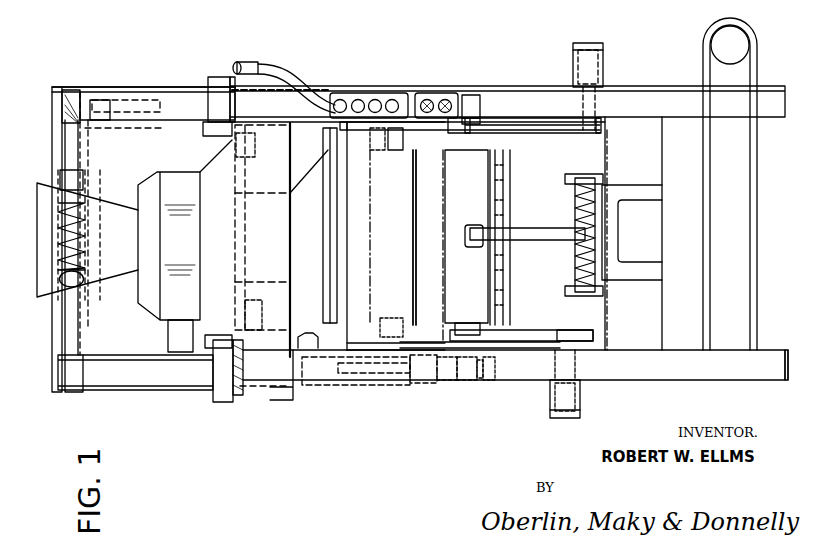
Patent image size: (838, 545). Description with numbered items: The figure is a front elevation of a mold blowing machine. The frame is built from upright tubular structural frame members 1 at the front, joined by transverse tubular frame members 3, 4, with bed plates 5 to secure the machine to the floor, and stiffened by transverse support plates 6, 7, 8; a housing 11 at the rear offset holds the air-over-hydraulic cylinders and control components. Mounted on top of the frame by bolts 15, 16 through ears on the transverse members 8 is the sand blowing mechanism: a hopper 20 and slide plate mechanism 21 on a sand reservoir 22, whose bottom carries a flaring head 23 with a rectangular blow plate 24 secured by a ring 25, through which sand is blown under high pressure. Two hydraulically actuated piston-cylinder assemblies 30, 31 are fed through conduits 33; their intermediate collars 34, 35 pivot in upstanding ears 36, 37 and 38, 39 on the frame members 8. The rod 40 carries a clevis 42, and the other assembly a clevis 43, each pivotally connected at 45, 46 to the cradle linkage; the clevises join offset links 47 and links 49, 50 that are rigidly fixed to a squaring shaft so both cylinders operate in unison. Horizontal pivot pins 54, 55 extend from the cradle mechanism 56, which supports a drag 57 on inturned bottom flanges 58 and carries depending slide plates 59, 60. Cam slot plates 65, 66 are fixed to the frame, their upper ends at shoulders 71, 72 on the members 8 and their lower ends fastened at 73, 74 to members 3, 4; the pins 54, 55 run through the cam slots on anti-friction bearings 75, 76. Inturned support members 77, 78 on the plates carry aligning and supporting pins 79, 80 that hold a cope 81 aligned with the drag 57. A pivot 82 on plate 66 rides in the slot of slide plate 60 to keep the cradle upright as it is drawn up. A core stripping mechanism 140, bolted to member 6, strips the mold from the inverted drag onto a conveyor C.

The upright tubular structural frame member 1 is at (537, 97).
The transverse tubular frame member 3 is at (550, 400).
The transverse tubular frame member 4 is at (573, 70).
The bed plate 5 is at (785, 360).
The transverse support plate 6 is at (643, 133).
The transverse support plate 7 is at (280, 328).
The transverse support plate 8 is at (266, 80).
The housing 11 is at (117, 342).
The bolt 15 is at (260, 328).
The bolt 16 is at (255, 147).
The hopper 20 is at (103, 267).
The slide plate mechanism 21 is at (168, 175).
The sand reservoir 22 is at (285, 220).
The flaring head 23 is at (312, 187).
The blow plate 24 is at (340, 223).
The ring 25 is at (330, 128).
The piston-cylinder assembly 30 is at (143, 378).
The piston-cylinder assembly 31 is at (165, 100).
The conduit 33 is at (68, 143).
The collar 34 is at (220, 360).
The collar 35 is at (215, 100).
The upstanding ear 36 is at (234, 385).
The upstanding ear 37 is at (205, 333).
The upstanding ear 38 is at (203, 130).
The upstanding ear 39 is at (229, 100).
The rod 40 is at (388, 372).
The clevis 42 is at (420, 375).
The clevis 43 is at (406, 95).
The pivotal connection 45 is at (447, 375).
The pivotal connection 46 is at (440, 93).
The link 47 is at (463, 372).
The link 49 is at (483, 367).
The link 50 is at (472, 120).
The horizontal pivot pin 54 is at (474, 372).
The horizontal pivot pin 55 is at (470, 95).
The cradle mechanism 56 is at (503, 143).
The drag 57 is at (457, 190).
The inturned bottom flange 58 is at (497, 312).
The depending slide plate 59 is at (558, 330).
The depending slide plate 60 is at (543, 137).
The cam slot plate 65 is at (358, 347).
The cam slot plate 66 is at (358, 124).
The shoulder 71 is at (300, 337).
The shoulder 72 is at (275, 128).
The fastening 73 is at (573, 362).
The fastening 74 is at (595, 103).
The anti-friction bearing 75 is at (463, 345).
The anti-friction bearing 76 is at (462, 124).
The inturned support member 77 is at (395, 320).
The inturned support member 78 is at (398, 150).
The aligning and supporting pin 79 is at (402, 330).
The aligning and supporting pin 80 is at (378, 150).
The cope 81 is at (381, 244).
The pivot 82 is at (508, 133).
The core stripping mechanism 140 is at (565, 209).
The conveyor C is at (703, 70).